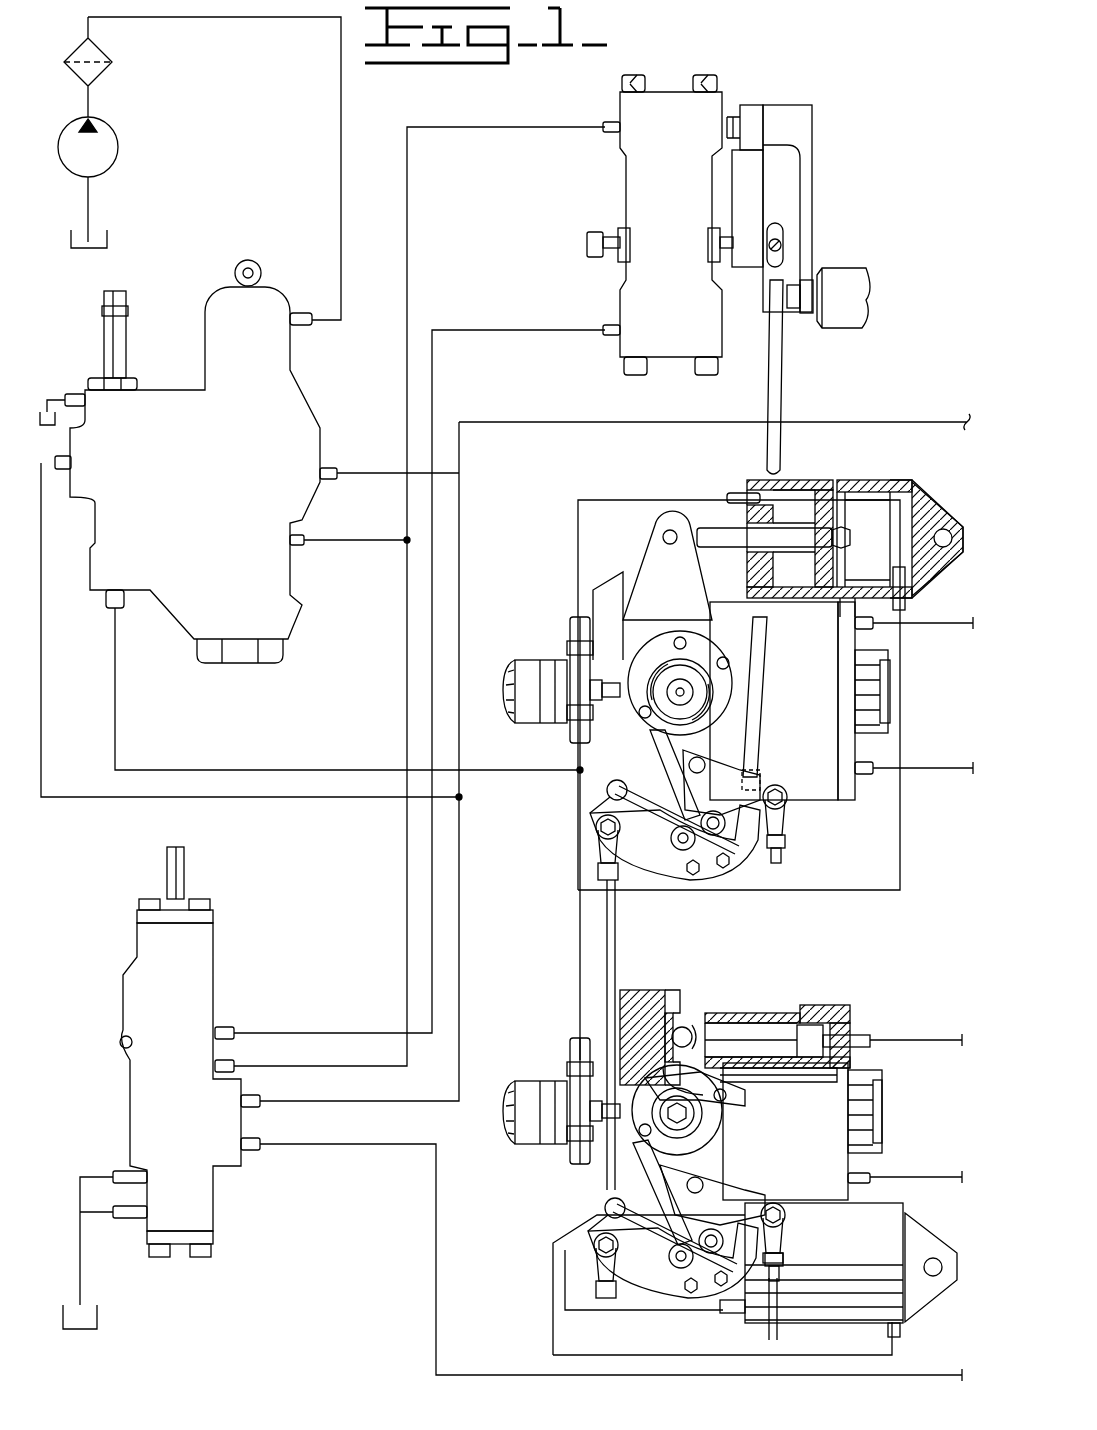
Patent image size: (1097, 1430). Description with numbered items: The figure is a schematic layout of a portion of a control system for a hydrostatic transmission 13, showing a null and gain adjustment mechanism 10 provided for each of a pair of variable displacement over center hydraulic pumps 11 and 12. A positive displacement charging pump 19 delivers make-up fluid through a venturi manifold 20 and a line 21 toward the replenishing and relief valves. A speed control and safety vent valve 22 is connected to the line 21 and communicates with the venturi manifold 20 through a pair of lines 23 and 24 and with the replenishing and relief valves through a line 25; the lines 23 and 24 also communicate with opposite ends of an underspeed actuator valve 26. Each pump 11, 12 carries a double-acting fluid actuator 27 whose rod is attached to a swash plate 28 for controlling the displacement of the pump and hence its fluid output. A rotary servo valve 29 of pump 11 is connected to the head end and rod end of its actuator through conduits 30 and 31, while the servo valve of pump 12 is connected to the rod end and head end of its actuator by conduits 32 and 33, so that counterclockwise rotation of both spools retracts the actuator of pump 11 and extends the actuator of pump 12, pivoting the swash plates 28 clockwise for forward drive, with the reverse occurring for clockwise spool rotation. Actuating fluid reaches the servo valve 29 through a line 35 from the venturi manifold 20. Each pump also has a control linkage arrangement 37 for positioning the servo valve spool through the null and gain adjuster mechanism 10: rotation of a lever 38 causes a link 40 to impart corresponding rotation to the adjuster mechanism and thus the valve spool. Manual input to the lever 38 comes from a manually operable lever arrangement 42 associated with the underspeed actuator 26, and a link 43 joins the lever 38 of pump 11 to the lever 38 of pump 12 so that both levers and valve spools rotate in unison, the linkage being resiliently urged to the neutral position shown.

The null and gain adjustment mechanism 10 is at (738, 677).
The variable displacement over center hydraulic pump 11 is at (818, 733).
The variable displacement over center hydraulic pump 12 is at (806, 1163).
The hydrostatic transmission 13 is at (887, 150).
The positive displacement charging pump 19 is at (106, 138).
The venturi manifold 20 is at (226, 485).
The line or conduit 21 is at (497, 422).
The speed control and safety vent valve 22 is at (197, 1072).
The line or conduit 23 is at (408, 176).
The line or conduit 24 is at (434, 336).
The line or conduit 25 is at (437, 1260).
The underspeed actuator valve 26 is at (690, 209).
The double-acting fluid actuator 27 is at (860, 478).
The swash plate 28 is at (686, 609).
The rotary servo valve 29 is at (626, 634).
The conduit 30 is at (787, 891).
The conduit 31 is at (610, 500).
The conduit 32 is at (640, 1312).
The conduit 33 is at (553, 1322).
The line or conduit 35 is at (580, 860).
The control linkage arrangement 37 is at (678, 896).
The lever 38 is at (625, 840).
The link 40 is at (663, 773).
The manually operable lever arrangement 42 is at (874, 102).
The link 43 is at (613, 970).